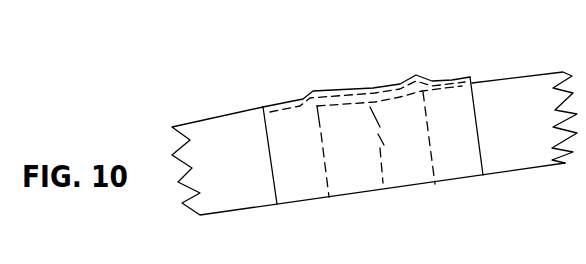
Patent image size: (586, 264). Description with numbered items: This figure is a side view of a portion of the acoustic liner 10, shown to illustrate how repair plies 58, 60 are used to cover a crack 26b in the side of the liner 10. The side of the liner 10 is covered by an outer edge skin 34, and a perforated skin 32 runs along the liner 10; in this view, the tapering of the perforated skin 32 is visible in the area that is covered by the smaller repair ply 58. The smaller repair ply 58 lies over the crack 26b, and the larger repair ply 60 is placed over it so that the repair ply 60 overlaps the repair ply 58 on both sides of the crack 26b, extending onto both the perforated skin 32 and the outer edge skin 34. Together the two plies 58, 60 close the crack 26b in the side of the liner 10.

The liner 10 is at (263, 56).
The perforated skin 32 is at (522, 77).
The outer edge skin 34 is at (244, 180).
The repair ply 58 is at (385, 91).
The repair ply 60 is at (403, 80).
The crack 26b is at (383, 140).